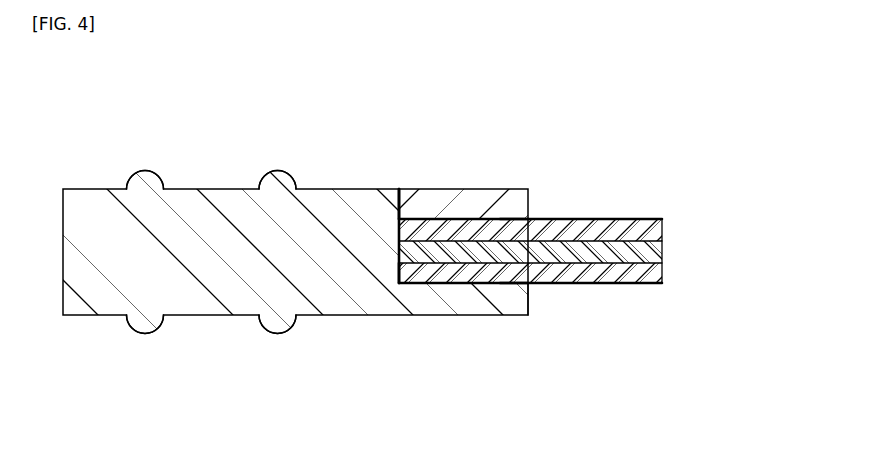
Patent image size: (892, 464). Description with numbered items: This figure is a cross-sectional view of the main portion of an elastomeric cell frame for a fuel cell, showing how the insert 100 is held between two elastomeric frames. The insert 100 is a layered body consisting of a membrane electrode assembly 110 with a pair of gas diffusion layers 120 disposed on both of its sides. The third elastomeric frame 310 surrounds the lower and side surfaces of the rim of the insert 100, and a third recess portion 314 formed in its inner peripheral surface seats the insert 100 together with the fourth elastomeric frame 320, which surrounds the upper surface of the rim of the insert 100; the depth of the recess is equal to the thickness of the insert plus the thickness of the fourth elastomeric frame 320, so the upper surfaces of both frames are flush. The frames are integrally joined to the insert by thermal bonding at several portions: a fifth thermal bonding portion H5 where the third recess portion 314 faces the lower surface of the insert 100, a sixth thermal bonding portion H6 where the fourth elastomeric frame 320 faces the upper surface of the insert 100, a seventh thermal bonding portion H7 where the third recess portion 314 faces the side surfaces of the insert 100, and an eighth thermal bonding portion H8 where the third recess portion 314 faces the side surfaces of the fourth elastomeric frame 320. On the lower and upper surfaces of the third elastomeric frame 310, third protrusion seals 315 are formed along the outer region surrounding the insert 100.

The insert 100 is at (557, 256).
The membrane electrode assembly 110 is at (657, 245).
The gas diffusion layers 120 is at (657, 225).
The third elastomeric frame 310 is at (85, 198).
The third recess portion 314 is at (530, 305).
The third protrusion seals 315 is at (273, 170).
The fourth elastomeric frame 320 is at (443, 203).
The fifth thermal bonding portion H5 is at (508, 287).
The sixth thermal bonding portion H6 is at (513, 217).
The seventh thermal bonding portion H7 is at (398, 270).
The eighth thermal bonding portion H8 is at (397, 208).